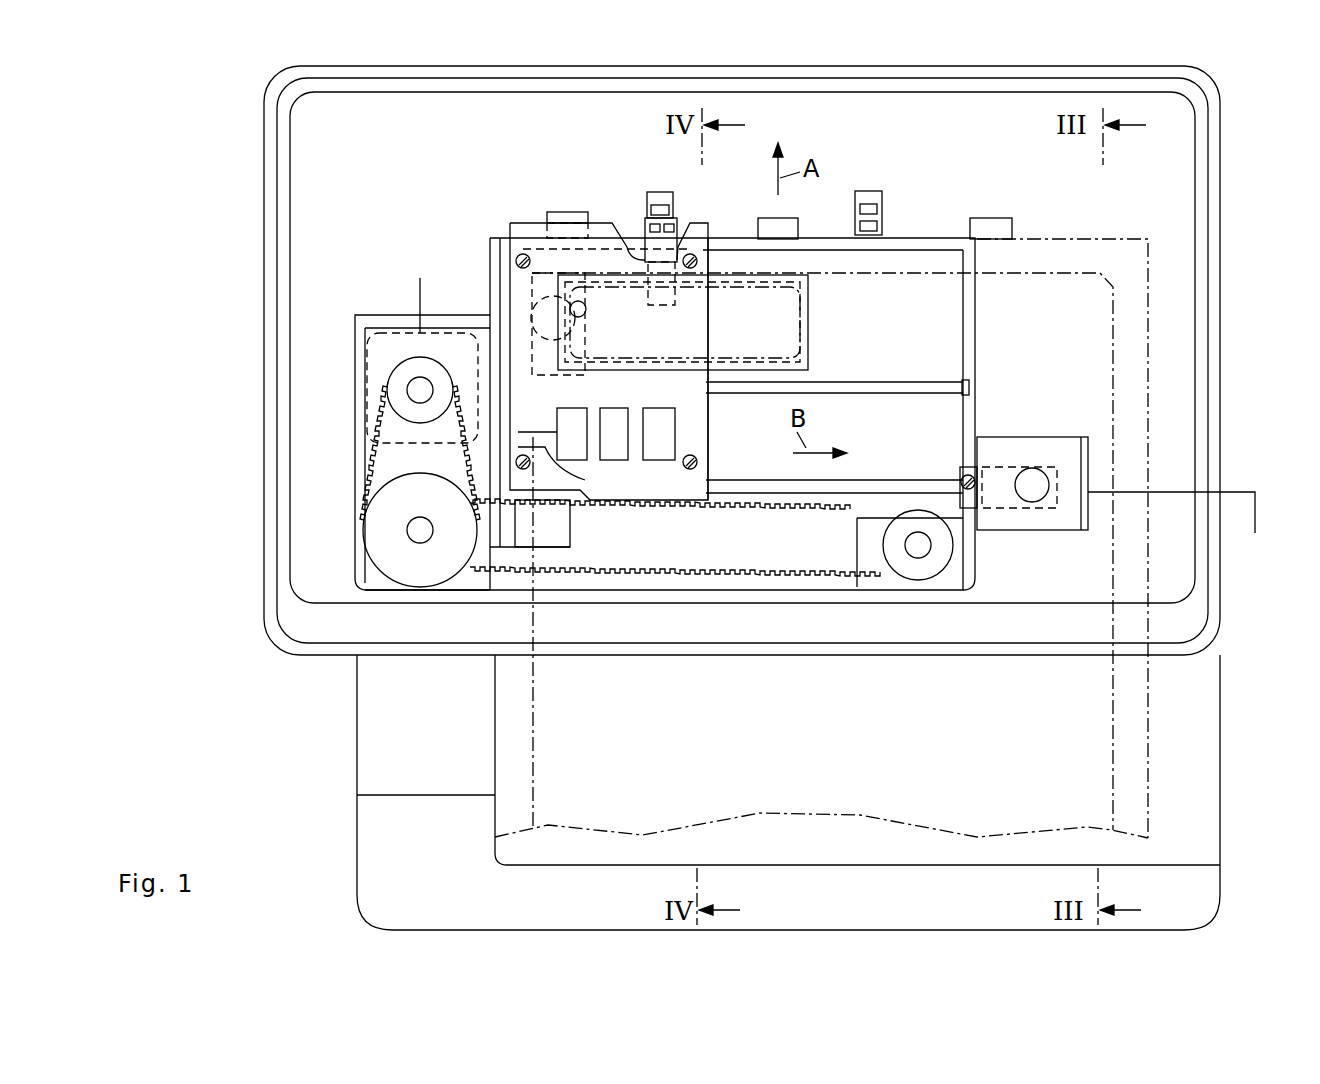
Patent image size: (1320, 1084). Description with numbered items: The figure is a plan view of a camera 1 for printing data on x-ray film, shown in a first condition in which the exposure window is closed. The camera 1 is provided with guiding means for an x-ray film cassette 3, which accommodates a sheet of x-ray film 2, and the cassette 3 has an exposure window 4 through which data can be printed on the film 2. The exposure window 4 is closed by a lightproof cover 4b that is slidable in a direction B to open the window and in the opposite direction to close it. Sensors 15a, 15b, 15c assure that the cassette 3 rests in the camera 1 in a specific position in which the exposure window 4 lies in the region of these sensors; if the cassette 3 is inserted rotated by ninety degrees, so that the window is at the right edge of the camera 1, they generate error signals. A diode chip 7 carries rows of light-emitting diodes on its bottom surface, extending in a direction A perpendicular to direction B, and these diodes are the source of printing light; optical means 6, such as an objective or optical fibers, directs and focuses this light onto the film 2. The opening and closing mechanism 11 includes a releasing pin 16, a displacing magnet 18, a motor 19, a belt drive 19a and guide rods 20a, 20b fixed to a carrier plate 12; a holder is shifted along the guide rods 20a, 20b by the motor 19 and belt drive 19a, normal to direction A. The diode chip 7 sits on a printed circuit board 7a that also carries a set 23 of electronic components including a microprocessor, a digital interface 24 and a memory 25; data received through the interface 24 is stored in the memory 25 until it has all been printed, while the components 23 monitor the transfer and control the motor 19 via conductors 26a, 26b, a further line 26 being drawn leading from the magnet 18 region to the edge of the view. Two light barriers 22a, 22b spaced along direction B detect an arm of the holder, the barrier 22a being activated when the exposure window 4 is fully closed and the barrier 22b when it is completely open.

The camera 1 is at (255, 204).
The x-ray film 2 is at (1113, 343).
The x-ray film cassette 3 is at (1150, 256).
The exposure window 4 is at (812, 297).
The lightproof cover 4b is at (806, 334).
The optical means 6 is at (548, 310).
The diode chip 7 is at (530, 313).
The printed circuit board 7a is at (708, 432).
The opening and closing mechanism 11 is at (340, 532).
The carrier plate 12 is at (962, 319).
The sensor 15a is at (576, 213).
The sensor 15b is at (757, 233).
The sensor 15c is at (986, 214).
The releasing pin 16 is at (582, 307).
The displacing magnet 18 is at (1034, 440).
The motor 19 is at (377, 360).
The belt drive 19a is at (388, 462).
The guide rod 20a is at (940, 383).
The guide rod 20b is at (938, 487).
The light barrier 22a is at (647, 205).
The light barrier 22b is at (882, 210).
The set of electronic components 23 is at (570, 408).
The digital interface 24 is at (613, 408).
The memory 25 is at (648, 465).
The cable 26 is at (1257, 523).
The conductor 26a is at (410, 298).
The conductor 26b is at (585, 480).